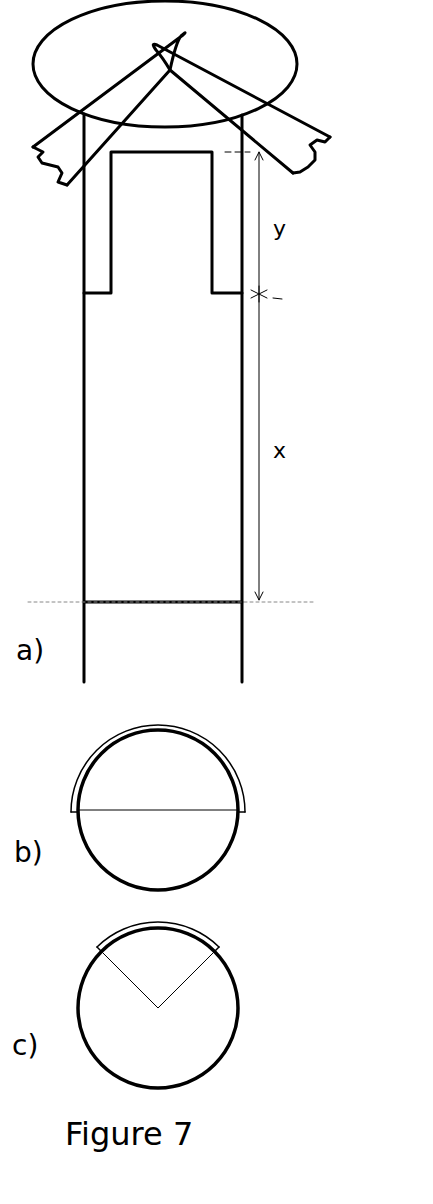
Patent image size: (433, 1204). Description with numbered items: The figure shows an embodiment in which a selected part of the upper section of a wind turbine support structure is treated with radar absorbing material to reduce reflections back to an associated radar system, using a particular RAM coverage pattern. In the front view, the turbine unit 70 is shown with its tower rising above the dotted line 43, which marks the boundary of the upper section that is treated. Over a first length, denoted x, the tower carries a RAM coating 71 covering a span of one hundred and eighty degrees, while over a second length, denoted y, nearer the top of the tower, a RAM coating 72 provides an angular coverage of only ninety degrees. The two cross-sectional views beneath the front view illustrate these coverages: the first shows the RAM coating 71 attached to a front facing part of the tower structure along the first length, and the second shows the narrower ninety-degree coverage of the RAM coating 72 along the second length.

The turbine unit 70 is at (316, 50).
The RAM coating 71 is at (97, 390).
The RAM coating 72 is at (125, 245).
The dotted line 43 is at (290, 590).